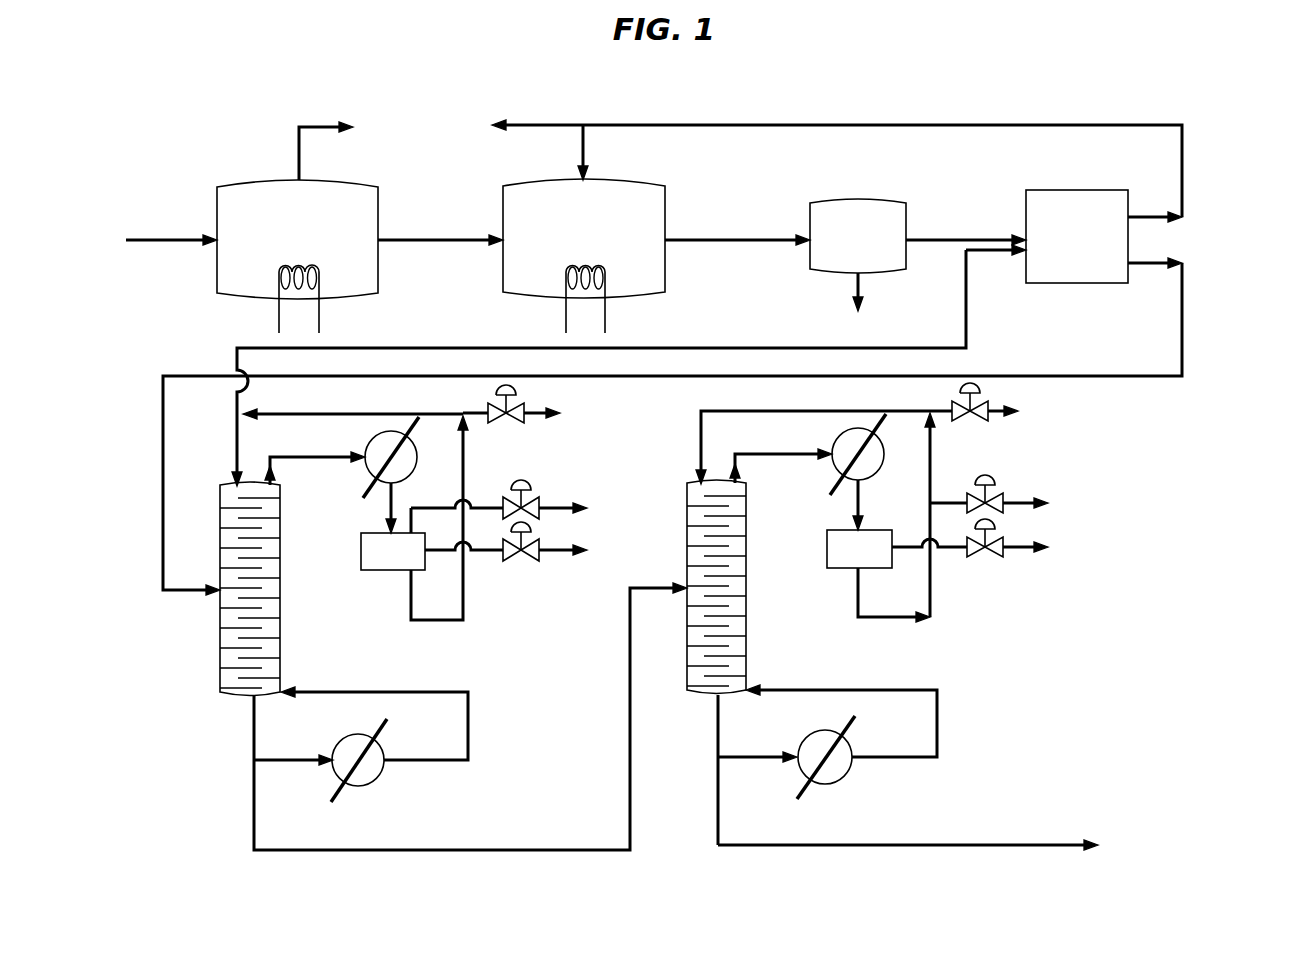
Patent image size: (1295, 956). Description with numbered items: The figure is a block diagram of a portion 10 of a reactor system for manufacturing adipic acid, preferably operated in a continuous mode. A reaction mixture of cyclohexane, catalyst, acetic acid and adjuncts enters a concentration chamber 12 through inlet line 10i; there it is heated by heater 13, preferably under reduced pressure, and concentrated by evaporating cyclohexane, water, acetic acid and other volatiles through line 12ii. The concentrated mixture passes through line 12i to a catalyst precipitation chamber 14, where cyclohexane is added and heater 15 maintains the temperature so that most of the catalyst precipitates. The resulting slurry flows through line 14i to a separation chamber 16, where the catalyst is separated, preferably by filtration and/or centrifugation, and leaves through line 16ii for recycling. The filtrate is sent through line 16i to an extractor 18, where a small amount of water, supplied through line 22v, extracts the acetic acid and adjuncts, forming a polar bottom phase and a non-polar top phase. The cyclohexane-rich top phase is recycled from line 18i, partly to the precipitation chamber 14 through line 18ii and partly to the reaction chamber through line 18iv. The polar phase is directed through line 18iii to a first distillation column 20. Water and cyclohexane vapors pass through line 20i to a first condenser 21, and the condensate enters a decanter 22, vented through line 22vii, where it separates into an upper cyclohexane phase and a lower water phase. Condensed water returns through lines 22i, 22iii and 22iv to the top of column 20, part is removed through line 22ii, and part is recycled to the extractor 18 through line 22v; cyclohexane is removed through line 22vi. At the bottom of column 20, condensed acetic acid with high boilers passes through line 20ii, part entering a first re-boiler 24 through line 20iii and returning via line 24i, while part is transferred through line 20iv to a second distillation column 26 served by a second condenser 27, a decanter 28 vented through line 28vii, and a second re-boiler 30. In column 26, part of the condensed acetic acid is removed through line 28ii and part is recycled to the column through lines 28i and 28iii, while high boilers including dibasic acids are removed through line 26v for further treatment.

The portion of reactor system 10 is at (1230, 124).
The inlet line 10i is at (157, 240).
The concentration chamber 12 is at (284, 254).
The line 12i is at (422, 240).
The line 12ii is at (313, 125).
The heater 13 is at (320, 323).
The catalyst precipitation chamber 14 is at (570, 254).
The line 14i is at (718, 240).
The heater 15 is at (606, 322).
The separation chamber 16 is at (844, 253).
The line 16i is at (953, 240).
The line 16ii is at (862, 289).
The extractor 18 is at (1066, 251).
The line 18i is at (668, 125).
The line 18ii is at (587, 150).
The line 18iii is at (1143, 265).
The line 18iv is at (530, 123).
The first distillation column 20 is at (220, 524).
The line 20i is at (305, 460).
The line 20ii is at (254, 727).
The line 20iii is at (283, 762).
The line 20iv is at (254, 805).
The first condenser 21 is at (365, 450).
The decanter 22 is at (379, 566).
The line 22i is at (465, 467).
The line 22ii is at (470, 415).
The line 22iii is at (456, 408).
The line 22iv is at (237, 440).
The line 22v is at (415, 347).
The line 22vi is at (588, 551).
The line 22vii is at (588, 508).
The first re-boiler 24 is at (340, 741).
The line 24i is at (410, 760).
The second distillation column 26 is at (686, 580).
The line 26v is at (890, 845).
The second condenser 27 is at (832, 448).
The decanter 28 is at (845, 563).
The line 28i is at (930, 463).
The line 28ii is at (1022, 411).
The line 28iii is at (788, 411).
The line 28vii is at (1049, 547).
The second re-boiler 30 is at (802, 739).